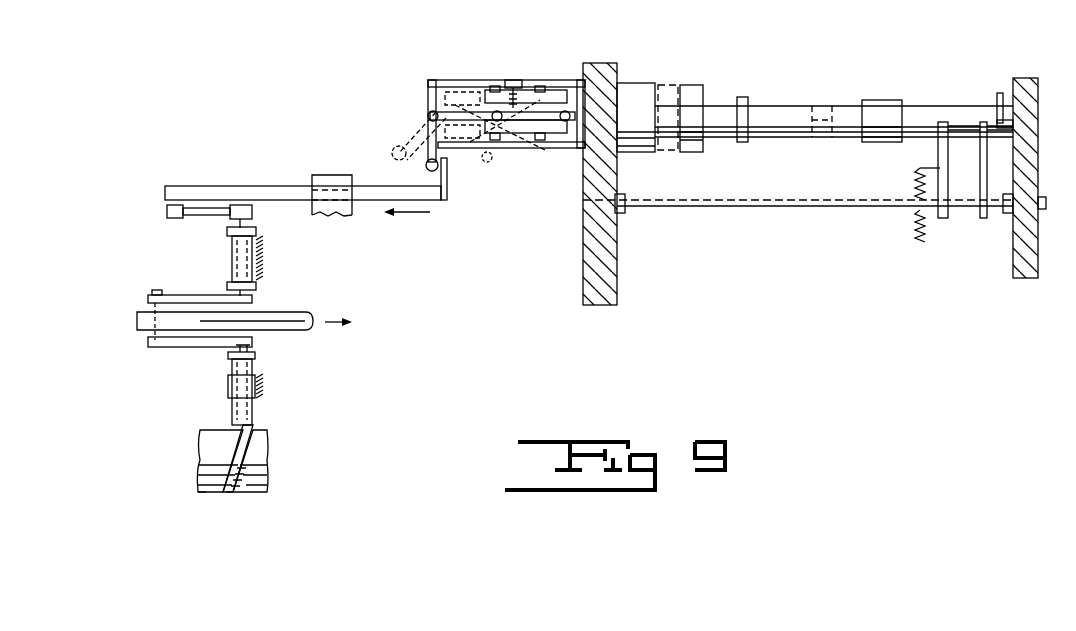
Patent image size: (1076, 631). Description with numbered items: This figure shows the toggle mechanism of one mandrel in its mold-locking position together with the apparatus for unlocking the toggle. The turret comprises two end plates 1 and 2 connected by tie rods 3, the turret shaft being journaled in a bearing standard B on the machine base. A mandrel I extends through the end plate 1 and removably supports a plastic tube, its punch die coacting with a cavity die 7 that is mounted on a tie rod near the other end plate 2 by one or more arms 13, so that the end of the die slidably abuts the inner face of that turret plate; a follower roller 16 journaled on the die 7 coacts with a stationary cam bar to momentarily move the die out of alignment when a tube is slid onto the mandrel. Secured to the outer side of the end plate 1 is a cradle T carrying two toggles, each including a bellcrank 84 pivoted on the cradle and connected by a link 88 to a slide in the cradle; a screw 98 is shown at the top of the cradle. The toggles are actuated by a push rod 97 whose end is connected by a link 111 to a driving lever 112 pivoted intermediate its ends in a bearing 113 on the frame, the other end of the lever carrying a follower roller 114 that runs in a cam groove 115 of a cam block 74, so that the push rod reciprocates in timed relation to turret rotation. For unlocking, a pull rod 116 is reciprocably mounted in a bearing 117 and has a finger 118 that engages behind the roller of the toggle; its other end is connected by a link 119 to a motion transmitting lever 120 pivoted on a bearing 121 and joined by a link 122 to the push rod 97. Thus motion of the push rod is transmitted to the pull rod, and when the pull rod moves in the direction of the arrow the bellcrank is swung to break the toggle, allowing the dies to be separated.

The end plate 1 is at (583, 280).
The end plate 2 is at (1027, 268).
The tie rods 3 is at (778, 206).
The cavity die 7 is at (880, 105).
The arms 13 is at (985, 218).
The follower roller 16 is at (1007, 95).
The cam block 74 is at (256, 470).
The bellcrank 84 is at (447, 117).
The link 88 is at (533, 132).
The push rod 97 is at (315, 313).
The adjusting screw 98 is at (514, 80).
The link 111 is at (176, 347).
The driving lever 112 is at (258, 361).
The bearing 113 is at (232, 392).
The follower roller 114 is at (250, 437).
The cam groove 115 is at (230, 490).
The pull rod 116 is at (258, 186).
The bearing 117 is at (334, 176).
The finger 118 is at (447, 184).
The link 119 is at (200, 215).
The motion transmitting lever 120 is at (260, 229).
The bearing 121 is at (260, 262).
The link 122 is at (205, 275).
The mandrel I is at (721, 106).
The cradle T is at (464, 81).
The bearing standard B is at (205, 495).